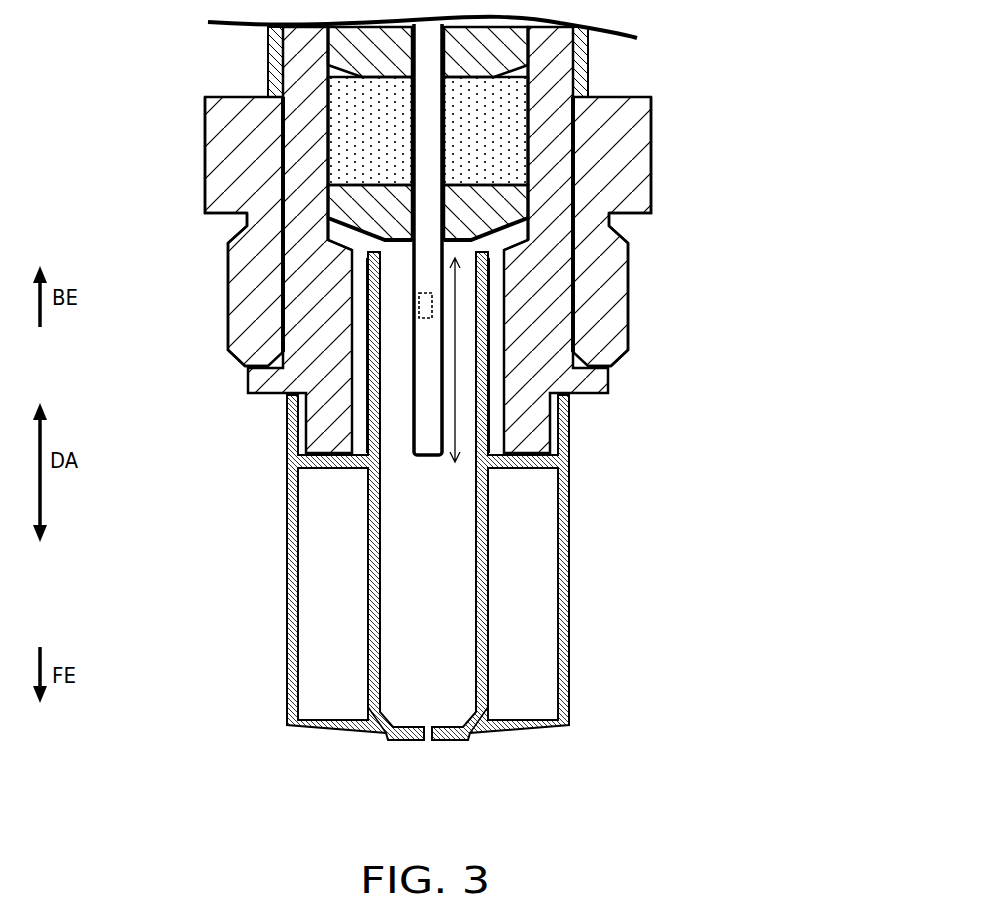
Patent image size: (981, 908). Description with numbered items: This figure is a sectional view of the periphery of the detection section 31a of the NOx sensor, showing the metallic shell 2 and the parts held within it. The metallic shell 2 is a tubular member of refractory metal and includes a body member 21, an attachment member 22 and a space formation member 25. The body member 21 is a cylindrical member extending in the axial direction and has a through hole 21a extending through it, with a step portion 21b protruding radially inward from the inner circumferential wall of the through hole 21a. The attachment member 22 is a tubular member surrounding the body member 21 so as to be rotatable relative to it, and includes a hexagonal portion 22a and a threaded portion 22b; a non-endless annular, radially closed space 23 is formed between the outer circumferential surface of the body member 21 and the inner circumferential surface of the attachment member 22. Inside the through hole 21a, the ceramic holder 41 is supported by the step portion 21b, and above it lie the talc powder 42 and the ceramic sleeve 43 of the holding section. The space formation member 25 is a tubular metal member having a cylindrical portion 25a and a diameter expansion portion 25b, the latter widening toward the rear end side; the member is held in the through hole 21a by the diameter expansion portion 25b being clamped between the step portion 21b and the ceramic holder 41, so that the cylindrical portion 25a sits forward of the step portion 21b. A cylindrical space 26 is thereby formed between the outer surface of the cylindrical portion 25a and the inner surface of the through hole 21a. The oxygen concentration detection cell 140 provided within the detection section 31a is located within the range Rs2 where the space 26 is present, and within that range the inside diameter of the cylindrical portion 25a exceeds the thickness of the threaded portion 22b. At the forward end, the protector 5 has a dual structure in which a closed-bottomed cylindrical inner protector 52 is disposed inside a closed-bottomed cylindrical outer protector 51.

The metallic shell 2 is at (782, 85).
The body member 21 is at (555, 127).
The through hole 21a is at (527, 115).
The step portion 21b is at (280, 289).
The attachment member 22 is at (733, 110).
The hexagonal portion 22a is at (615, 155).
The threaded portion 22b is at (615, 282).
The space 23 is at (281, 243).
The space formation member 25 is at (737, 328).
The cylindrical portion 25a is at (495, 332).
The diameter expansion portion 25b is at (503, 240).
The space 26 is at (492, 398).
The detection section 31a is at (430, 388).
The ceramic holder 41 is at (338, 207).
The talc powder 42 is at (338, 137).
The ceramic sleeve 43 is at (350, 52).
The protector 5 is at (198, 542).
The outer protector 51 is at (286, 552).
The inner protector 52 is at (370, 610).
The oxygen concentration detection cell 140 is at (418, 320).
The range Rs2 is at (568, 456).